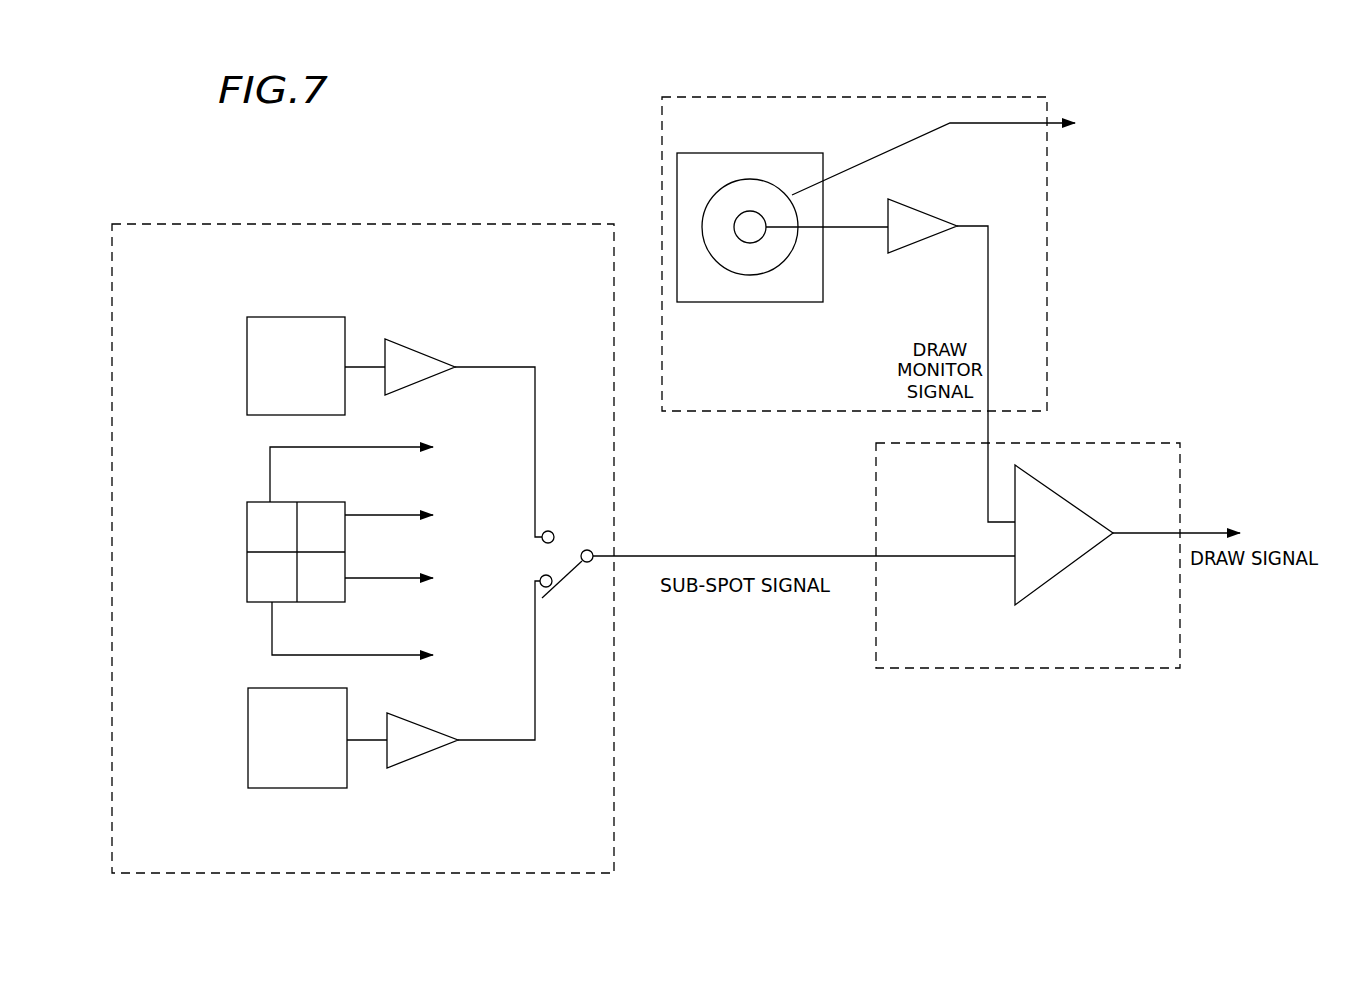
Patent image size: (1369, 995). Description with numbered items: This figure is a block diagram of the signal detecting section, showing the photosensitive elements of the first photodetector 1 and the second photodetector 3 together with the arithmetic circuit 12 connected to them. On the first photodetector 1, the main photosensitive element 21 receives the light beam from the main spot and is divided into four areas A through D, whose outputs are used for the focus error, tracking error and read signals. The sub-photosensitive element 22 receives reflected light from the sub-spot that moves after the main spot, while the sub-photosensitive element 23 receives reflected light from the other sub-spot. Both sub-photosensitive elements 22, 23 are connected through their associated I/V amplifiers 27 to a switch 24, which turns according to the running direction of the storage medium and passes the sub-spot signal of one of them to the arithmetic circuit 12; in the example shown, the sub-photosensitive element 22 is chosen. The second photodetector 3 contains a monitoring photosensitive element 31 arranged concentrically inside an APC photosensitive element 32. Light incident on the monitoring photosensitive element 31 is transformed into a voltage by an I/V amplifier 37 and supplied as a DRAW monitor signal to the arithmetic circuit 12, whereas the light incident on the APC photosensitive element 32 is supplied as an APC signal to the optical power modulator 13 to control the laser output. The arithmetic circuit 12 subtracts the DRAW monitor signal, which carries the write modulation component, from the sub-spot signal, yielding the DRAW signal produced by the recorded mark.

The first photodetector 1 is at (232, 257).
The second photodetector 3 is at (680, 125).
The arithmetic circuit 12 is at (972, 642).
The optical power modulator 13 is at (1074, 157).
The main photosensitive element 21 is at (250, 533).
The sub-photosensitive element 22 is at (252, 722).
The sub-photosensitive element 23 is at (250, 348).
The switch 24 is at (578, 538).
The I/V amplifier 27 is at (435, 345).
The monitoring photosensitive element 31 is at (752, 233).
The APC photosensitive element 32 is at (750, 258).
The I/V amplifier 37 is at (903, 257).